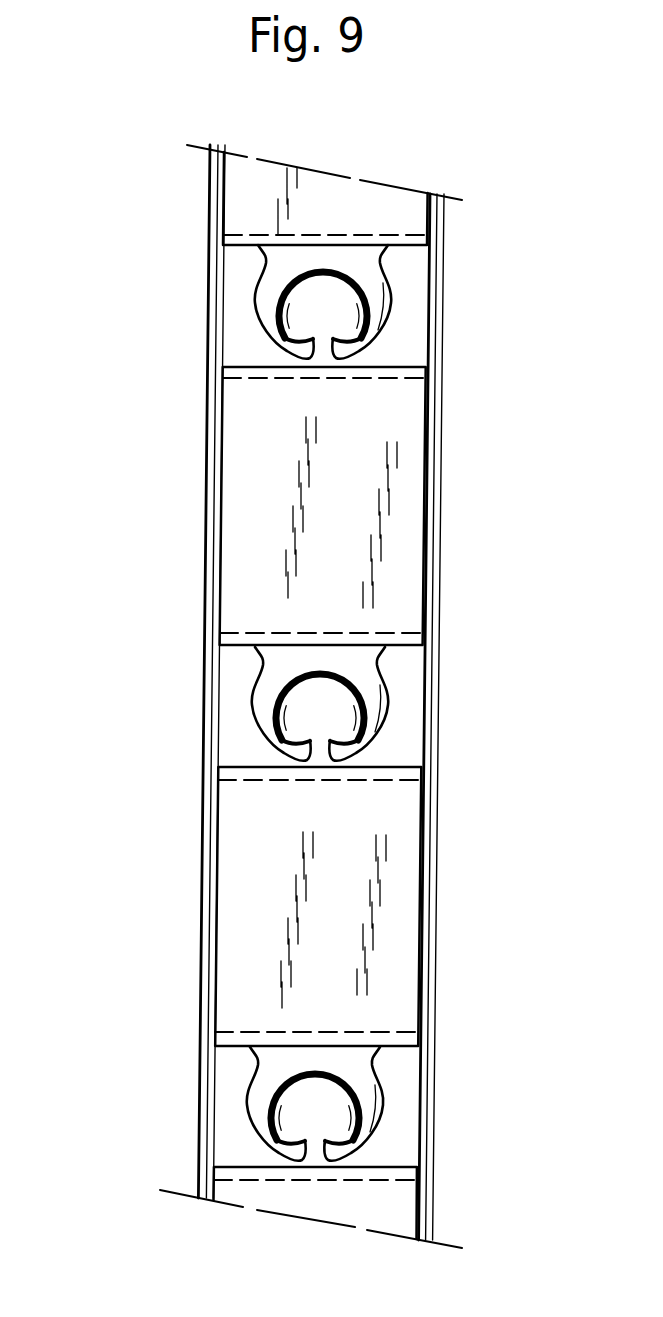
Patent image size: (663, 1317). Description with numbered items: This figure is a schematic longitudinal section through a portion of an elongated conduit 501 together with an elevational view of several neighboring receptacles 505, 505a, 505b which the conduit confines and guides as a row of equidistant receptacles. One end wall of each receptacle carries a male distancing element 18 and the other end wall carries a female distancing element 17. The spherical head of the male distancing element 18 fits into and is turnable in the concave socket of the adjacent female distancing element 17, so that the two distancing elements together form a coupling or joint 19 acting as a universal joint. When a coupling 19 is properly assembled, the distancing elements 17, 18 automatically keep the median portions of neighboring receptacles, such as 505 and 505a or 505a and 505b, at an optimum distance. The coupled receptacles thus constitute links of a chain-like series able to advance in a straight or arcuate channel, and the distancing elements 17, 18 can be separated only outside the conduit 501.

The conduit 501 is at (207, 610).
The receptacle 505 is at (240, 955).
The receptacle 505a is at (248, 465).
The receptacle 505b is at (242, 213).
The female distancing element 17 is at (378, 303).
The male distancing element 18 is at (333, 315).
The coupling or joint 19 is at (363, 677).